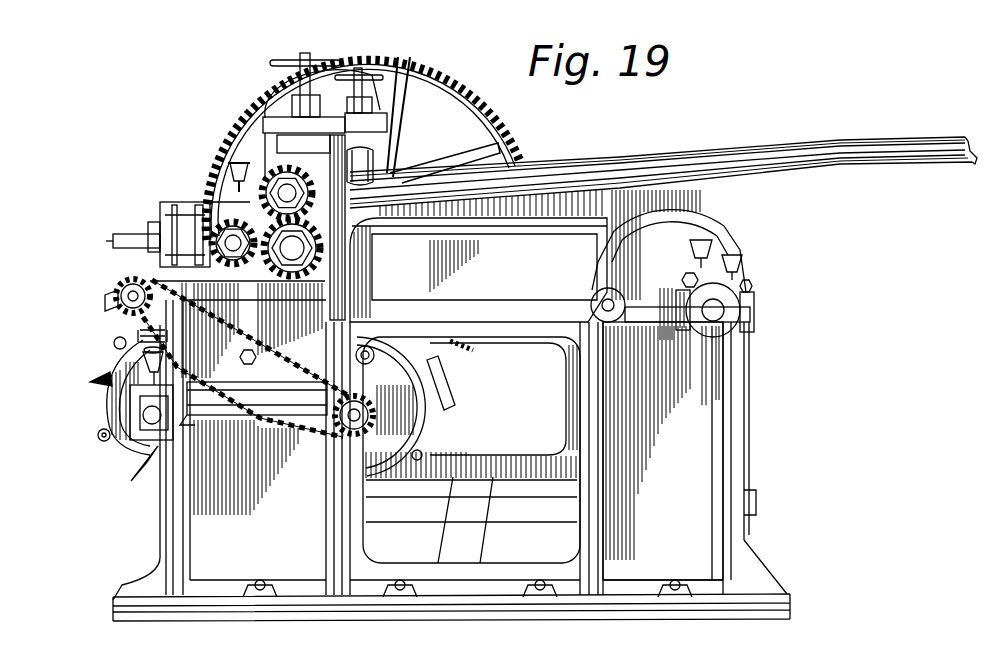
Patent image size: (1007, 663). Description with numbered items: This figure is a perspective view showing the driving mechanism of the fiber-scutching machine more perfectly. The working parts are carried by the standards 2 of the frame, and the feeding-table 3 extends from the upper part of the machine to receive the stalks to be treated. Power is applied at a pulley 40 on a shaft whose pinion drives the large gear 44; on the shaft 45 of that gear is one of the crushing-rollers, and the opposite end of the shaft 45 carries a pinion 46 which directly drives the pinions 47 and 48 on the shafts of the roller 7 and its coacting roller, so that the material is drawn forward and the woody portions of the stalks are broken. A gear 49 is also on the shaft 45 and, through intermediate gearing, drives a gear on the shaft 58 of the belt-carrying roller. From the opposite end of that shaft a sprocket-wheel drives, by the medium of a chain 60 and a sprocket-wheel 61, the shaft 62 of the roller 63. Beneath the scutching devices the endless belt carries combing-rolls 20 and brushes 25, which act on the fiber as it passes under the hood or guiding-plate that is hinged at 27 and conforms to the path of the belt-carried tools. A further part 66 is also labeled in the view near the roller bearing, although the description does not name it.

The standards 2 is at (451, 452).
The feeding-table 3 is at (663, 159).
The roller 7 is at (398, 153).
The combing-rolls 20 is at (452, 357).
The brushes 25 is at (451, 386).
The hinge 27 is at (110, 376).
The pulley 40 is at (714, 217).
The large gear 44 is at (363, 134).
The shaft 45 is at (300, 265).
The pinion 46 is at (335, 245).
The pinion 47 is at (246, 170).
The pinion 48 is at (217, 220).
The gear 49 is at (405, 158).
The shaft 58 is at (338, 443).
The chain 60 is at (215, 394).
The sprocket-wheel 61 is at (125, 338).
The shaft 62 is at (130, 300).
The roller 63 is at (143, 263).
The oil cup 66 is at (692, 257).